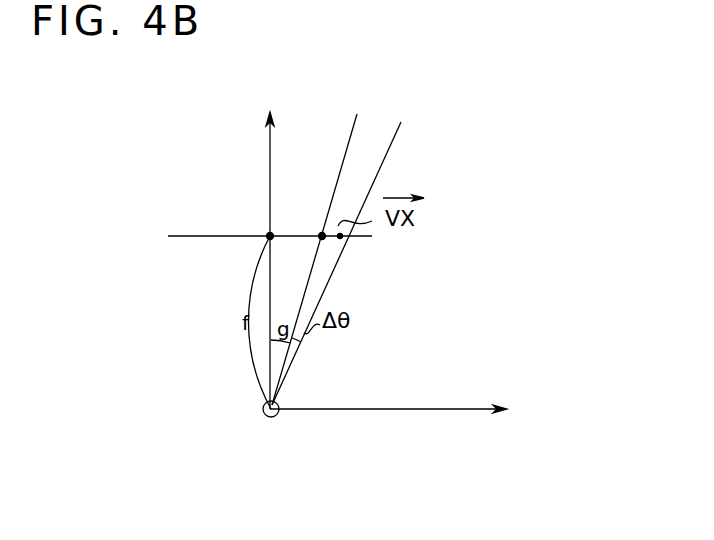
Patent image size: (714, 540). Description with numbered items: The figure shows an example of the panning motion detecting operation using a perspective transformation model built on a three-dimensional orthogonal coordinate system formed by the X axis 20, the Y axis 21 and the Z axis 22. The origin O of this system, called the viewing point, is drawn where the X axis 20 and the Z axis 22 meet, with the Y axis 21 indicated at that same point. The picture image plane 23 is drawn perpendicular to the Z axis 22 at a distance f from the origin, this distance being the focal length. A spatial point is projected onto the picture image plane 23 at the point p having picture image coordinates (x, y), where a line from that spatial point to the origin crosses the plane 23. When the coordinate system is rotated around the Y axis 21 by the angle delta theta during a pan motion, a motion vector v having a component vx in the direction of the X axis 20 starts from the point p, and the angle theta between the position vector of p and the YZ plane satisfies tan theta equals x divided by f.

The X axis 20 is at (405, 410).
The Y axis 21 is at (262, 410).
The Z axis 22 is at (268, 146).
The picture image plane 23 is at (190, 236).